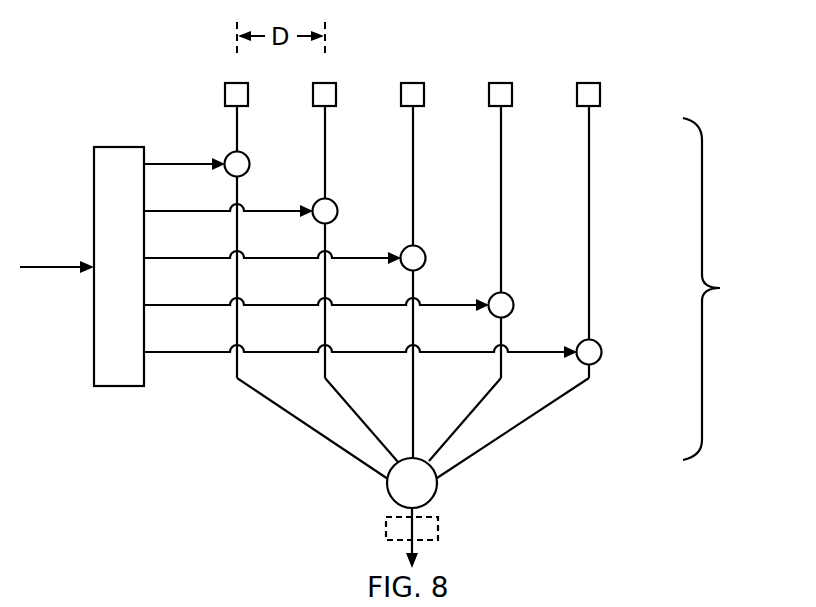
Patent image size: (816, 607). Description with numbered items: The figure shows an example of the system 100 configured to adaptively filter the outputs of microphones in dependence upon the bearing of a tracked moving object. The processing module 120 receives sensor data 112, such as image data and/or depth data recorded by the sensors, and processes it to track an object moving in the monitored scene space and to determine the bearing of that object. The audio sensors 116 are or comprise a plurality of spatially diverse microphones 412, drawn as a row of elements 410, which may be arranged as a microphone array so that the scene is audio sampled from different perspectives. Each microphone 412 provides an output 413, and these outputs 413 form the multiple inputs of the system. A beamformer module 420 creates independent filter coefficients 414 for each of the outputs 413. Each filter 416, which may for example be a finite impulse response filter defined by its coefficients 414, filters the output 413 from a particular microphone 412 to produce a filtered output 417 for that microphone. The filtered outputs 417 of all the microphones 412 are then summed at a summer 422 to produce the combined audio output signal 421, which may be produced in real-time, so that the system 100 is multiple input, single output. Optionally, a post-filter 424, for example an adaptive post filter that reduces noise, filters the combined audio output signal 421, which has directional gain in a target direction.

The system 100 is at (170, 470).
The sensor data 112 is at (60, 265).
The audio sensors 116 is at (690, 78).
The processing module 120 is at (727, 289).
The antenna element array 410 is at (200, 90).
The spatially diverse microphones 412 is at (248, 92).
The outputs 413 is at (237, 137).
The filter coefficients 414 is at (208, 161).
The filter 416 is at (248, 160).
The filtered output 417 is at (265, 401).
The beamformer module 420 is at (118, 389).
The combined audio output signal 421 is at (416, 548).
The summer 422 is at (437, 486).
The post-filter 424 is at (386, 529).